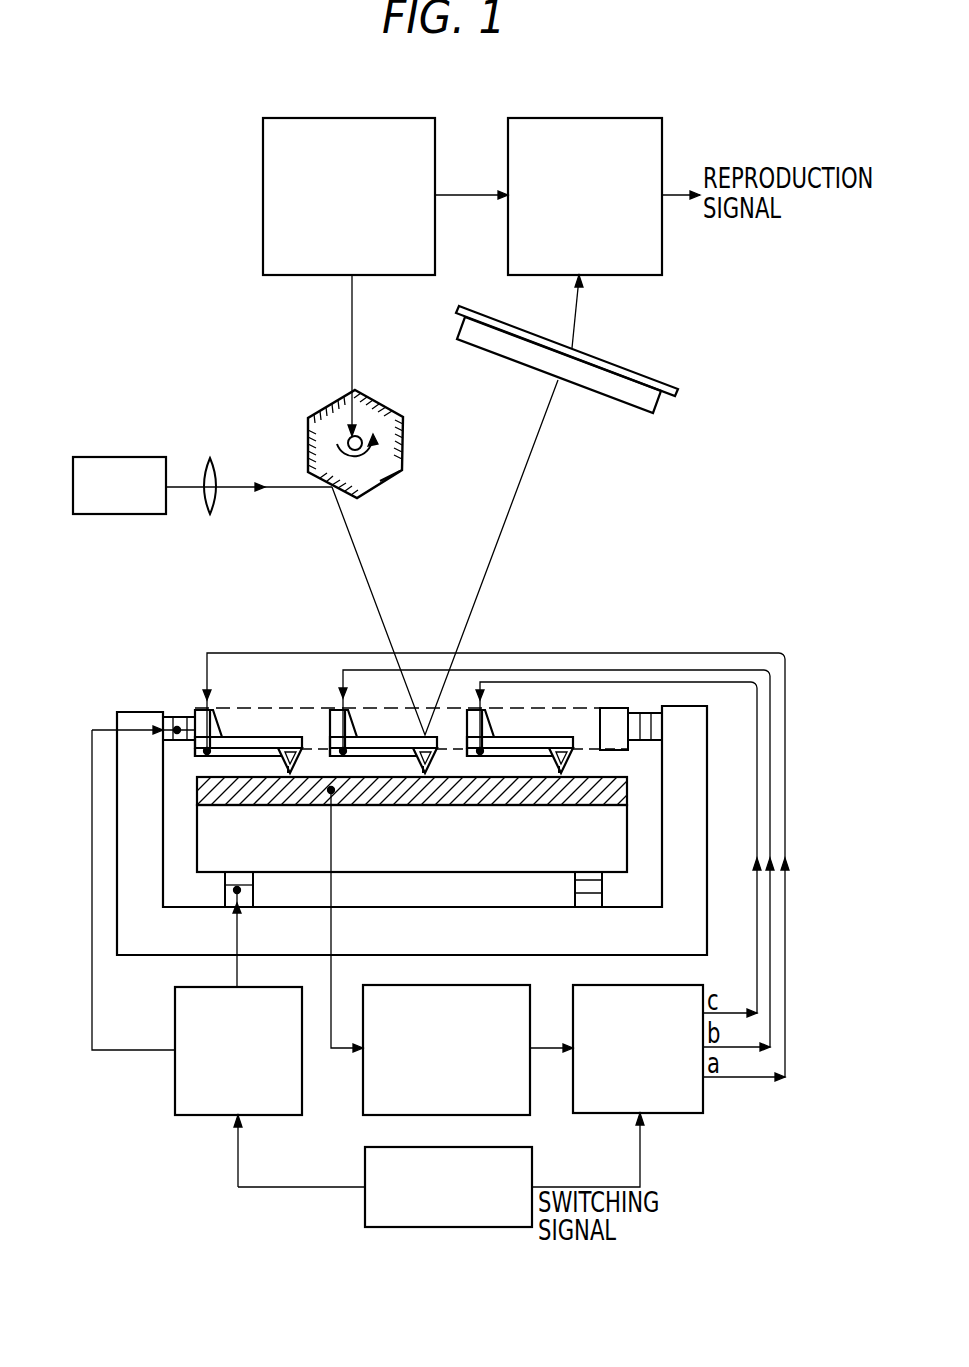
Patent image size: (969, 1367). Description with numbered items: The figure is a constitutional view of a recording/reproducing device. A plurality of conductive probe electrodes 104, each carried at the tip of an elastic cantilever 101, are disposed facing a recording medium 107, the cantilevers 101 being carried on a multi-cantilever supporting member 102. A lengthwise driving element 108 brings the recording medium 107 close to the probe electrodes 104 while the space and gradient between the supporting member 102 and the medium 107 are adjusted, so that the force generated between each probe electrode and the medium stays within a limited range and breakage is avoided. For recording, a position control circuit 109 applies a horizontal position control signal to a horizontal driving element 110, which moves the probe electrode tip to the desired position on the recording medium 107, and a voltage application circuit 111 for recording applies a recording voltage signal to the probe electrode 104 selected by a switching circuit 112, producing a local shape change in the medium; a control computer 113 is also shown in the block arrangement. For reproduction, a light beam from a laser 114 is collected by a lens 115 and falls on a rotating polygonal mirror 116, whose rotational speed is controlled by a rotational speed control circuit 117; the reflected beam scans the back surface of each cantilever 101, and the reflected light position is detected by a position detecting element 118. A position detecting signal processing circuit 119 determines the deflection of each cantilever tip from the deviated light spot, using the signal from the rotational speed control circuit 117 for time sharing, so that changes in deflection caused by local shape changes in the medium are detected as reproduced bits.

The cantilever 101 is at (257, 738).
The multi-cantilever supporting member 102 is at (607, 708).
The probe electrode 104 is at (289, 778).
The recording medium 107 is at (510, 778).
The lengthwise driving element 108 is at (227, 890).
The position control circuit 109 is at (190, 1117).
The horizontal driving element 110 is at (180, 715).
The voltage application circuit for recording 111 is at (365, 1118).
The switching circuit 112 is at (685, 1115).
The control computer 113 is at (403, 1228).
The laser 114 is at (137, 457).
The lens 115 is at (210, 458).
The rotating polygonal mirror 116 is at (330, 405).
The rotational speed control circuit 117 is at (397, 118).
The position detecting element 118 is at (653, 380).
The position detecting signal processing circuit 119 is at (635, 118).